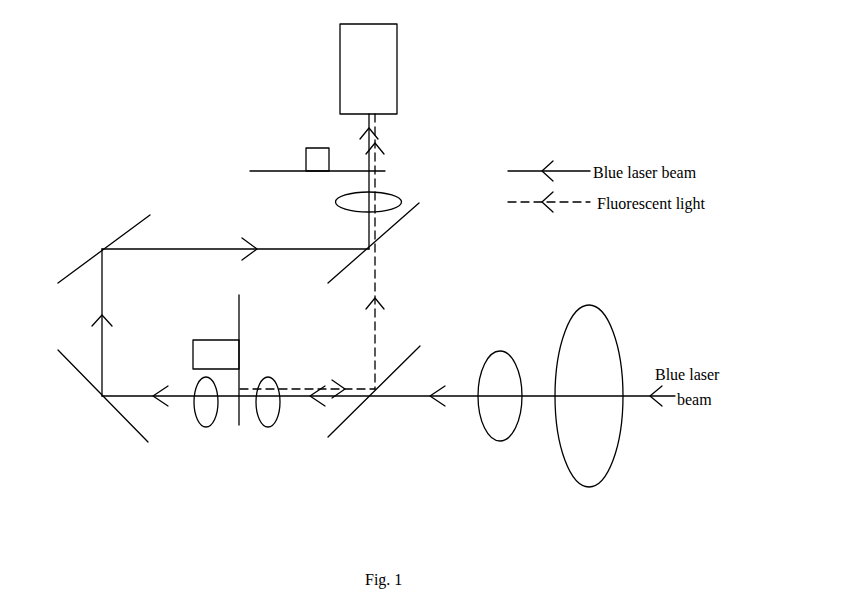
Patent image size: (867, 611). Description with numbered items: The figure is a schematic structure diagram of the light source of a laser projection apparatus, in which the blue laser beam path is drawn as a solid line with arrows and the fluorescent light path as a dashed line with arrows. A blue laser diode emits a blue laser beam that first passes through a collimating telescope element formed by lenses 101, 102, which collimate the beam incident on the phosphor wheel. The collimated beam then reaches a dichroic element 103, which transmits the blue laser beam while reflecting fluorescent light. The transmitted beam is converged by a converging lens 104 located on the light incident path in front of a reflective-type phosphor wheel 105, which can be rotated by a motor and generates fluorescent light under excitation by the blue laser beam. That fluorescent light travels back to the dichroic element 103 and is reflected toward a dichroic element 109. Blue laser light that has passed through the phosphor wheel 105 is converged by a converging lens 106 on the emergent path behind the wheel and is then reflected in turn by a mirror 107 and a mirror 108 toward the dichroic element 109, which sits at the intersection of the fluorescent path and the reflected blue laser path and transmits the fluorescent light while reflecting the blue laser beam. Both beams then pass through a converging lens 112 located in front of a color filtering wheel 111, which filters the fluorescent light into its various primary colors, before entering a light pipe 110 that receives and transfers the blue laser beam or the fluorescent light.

The lens 101 is at (620, 358).
The lens 102 is at (498, 352).
The dichroic element 103 is at (350, 413).
The converging lens 104 is at (268, 428).
The reflective-type phosphor wheel 105 is at (237, 298).
The converging lens 106 is at (206, 428).
The mirror 107 is at (118, 414).
The mirror 108 is at (118, 238).
The dichroic element 109 is at (395, 228).
The light pipe 110 is at (398, 52).
The color filtering wheel 111 is at (280, 171).
The converging lens 112 is at (398, 190).